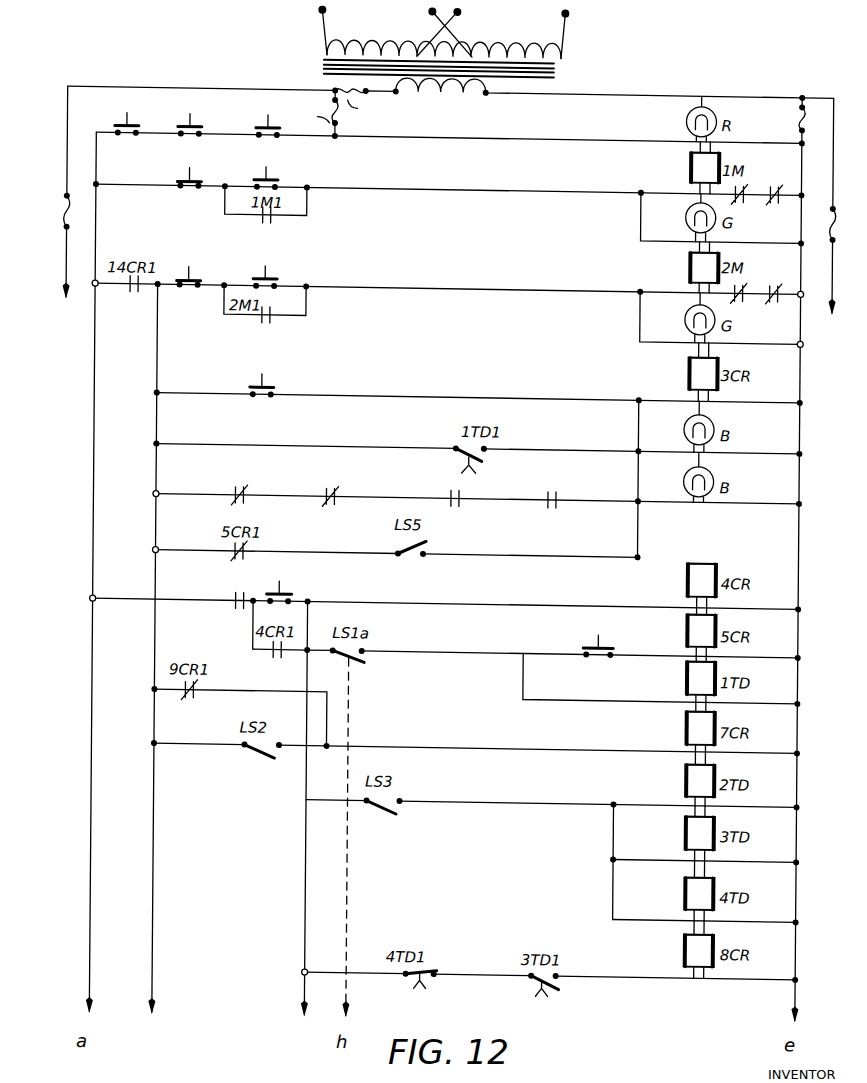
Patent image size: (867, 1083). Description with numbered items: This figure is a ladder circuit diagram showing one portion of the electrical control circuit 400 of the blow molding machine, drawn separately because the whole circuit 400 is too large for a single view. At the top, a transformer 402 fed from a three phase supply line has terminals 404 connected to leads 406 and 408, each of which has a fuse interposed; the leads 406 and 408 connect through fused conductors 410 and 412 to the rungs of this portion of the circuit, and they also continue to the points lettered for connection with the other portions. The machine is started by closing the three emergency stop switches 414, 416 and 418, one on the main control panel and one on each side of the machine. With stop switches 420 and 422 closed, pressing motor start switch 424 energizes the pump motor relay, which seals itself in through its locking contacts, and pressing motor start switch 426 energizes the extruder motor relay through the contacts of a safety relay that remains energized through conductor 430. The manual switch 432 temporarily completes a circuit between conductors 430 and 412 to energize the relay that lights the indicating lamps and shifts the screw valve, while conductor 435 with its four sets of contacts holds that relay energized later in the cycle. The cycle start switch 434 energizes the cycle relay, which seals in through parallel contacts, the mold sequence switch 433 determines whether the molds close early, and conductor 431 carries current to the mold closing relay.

The control circuit 400 is at (687, 52).
The transformer 402 is at (562, 44).
The terminals 404 is at (495, 104).
The lead 406 is at (66, 130).
The lead 408 is at (833, 128).
The conductor 410 is at (337, 133).
The conductor 412 is at (798, 132).
The emergency stop switch 414 is at (128, 140).
The emergency stop switch 416 is at (191, 140).
The emergency stop switch 418 is at (269, 140).
The stop switch 420 is at (186, 194).
The stop switch 422 is at (186, 293).
The motor start switch 424 is at (268, 173).
The motor start switch 426 is at (268, 271).
The conductor 430 is at (158, 835).
The conductor 431 is at (308, 890).
The manual switch 432 is at (266, 380).
The mold sequence switch 433 is at (603, 629).
The cycle start switch 434 is at (284, 583).
The conductor 435 is at (508, 495).